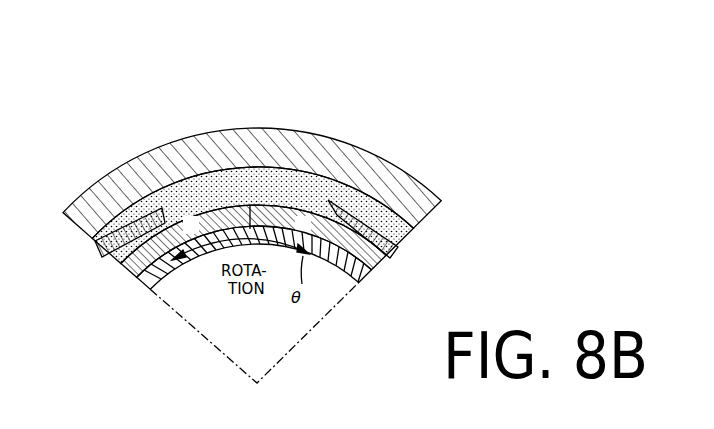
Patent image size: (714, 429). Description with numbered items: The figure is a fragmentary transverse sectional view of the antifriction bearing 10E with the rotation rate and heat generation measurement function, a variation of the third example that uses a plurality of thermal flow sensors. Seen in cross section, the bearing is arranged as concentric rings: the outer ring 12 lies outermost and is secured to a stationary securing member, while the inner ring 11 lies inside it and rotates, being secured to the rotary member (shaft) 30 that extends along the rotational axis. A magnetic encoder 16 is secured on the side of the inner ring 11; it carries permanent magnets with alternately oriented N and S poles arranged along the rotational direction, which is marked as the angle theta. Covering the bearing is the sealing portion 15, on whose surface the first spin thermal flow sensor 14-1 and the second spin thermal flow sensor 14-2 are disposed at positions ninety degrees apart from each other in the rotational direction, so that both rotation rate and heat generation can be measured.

The antifriction bearing with rotation rate and heat generation measurement function 10E is at (418, 72).
The inner ring 11 is at (362, 283).
The outer ring 12 is at (226, 147).
The first spin thermal flow sensor 14-1 is at (112, 248).
The second spin thermal flow sensor 14-2 is at (347, 210).
The sealing portion 15 is at (152, 188).
The magnetic encoder 16 is at (332, 246).
The rotary member (shaft) 30 is at (276, 337).